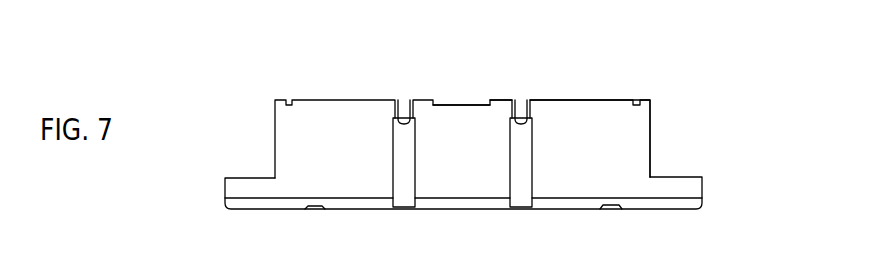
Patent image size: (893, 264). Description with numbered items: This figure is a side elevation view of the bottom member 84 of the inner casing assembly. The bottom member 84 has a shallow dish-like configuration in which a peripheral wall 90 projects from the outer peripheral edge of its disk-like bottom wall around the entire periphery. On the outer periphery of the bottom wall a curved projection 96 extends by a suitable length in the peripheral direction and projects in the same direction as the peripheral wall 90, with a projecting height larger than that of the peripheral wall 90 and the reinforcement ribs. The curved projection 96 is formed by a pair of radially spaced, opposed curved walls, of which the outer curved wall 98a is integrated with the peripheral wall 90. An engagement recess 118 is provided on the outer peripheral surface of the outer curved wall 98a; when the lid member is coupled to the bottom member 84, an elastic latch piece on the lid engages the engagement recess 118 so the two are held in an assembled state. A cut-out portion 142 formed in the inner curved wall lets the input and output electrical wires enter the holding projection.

The bottom member 84 is at (704, 177).
The peripheral wall 90 is at (687, 188).
The curved projection 96 is at (274, 99).
The outer curved wall 98a is at (517, 103).
The engagement recess 118 is at (403, 119).
The cut-out portion 142 is at (440, 101).